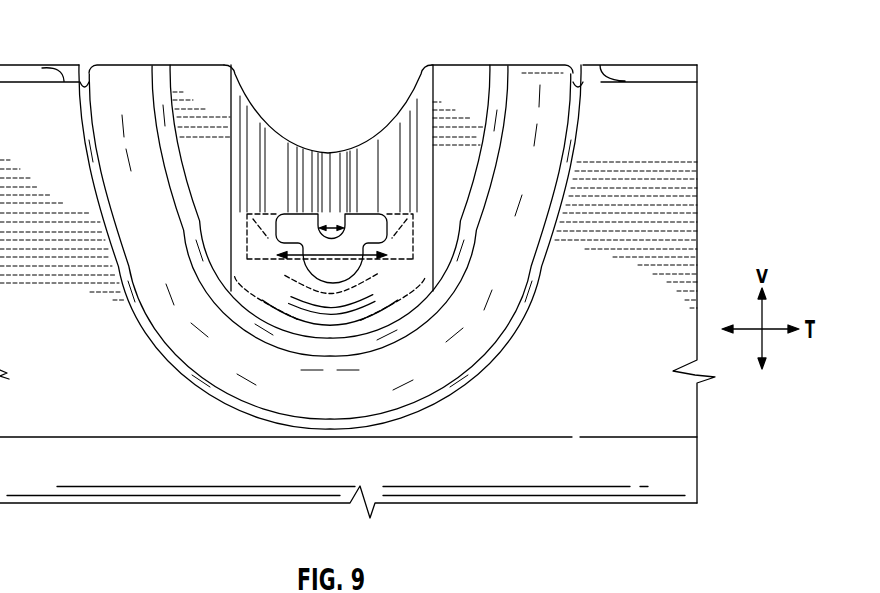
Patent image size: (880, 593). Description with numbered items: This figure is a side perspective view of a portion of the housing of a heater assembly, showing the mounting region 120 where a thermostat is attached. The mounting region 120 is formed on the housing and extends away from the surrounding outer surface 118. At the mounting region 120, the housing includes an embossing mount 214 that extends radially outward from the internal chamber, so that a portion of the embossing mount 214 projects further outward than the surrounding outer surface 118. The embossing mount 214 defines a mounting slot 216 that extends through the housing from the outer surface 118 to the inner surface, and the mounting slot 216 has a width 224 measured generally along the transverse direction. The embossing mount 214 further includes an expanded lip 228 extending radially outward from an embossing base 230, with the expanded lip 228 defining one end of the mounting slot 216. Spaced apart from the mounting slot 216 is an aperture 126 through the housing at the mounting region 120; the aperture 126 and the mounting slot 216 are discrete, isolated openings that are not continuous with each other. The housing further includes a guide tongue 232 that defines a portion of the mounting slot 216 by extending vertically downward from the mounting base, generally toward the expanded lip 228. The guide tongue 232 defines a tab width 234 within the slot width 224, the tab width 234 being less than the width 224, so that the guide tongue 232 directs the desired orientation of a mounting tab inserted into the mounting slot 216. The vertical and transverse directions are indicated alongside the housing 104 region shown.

The housing body 104 is at (680, 164).
The outer surface 118 is at (664, 469).
The mounting region 120 is at (168, 278).
The aperture 126 is at (320, 72).
The embossing mount 214 is at (400, 292).
The mounting slot 216 is at (313, 279).
The width 224 is at (328, 256).
The expanded lip 228 is at (355, 283).
The embossing base 230 is at (277, 168).
The guide tongue 232 is at (336, 228).
The tab width 234 is at (329, 214).